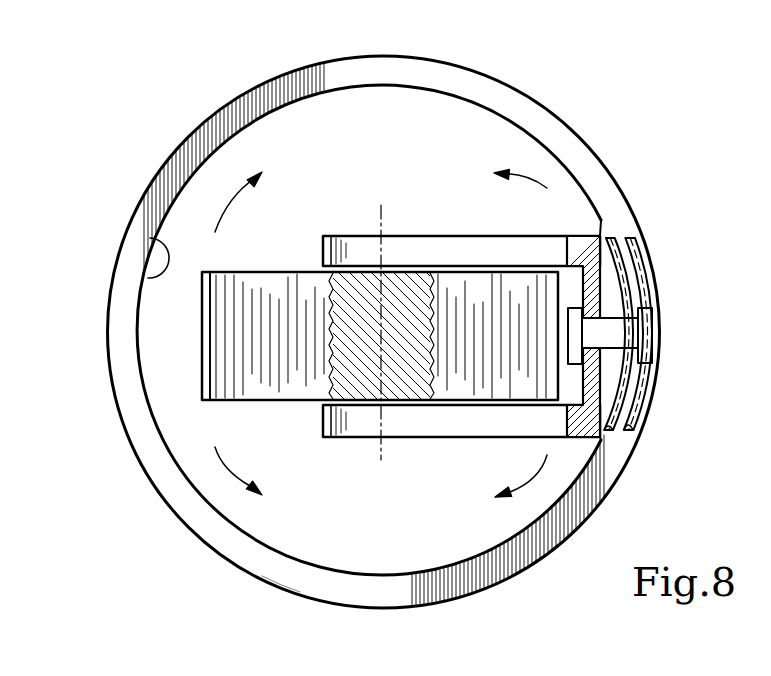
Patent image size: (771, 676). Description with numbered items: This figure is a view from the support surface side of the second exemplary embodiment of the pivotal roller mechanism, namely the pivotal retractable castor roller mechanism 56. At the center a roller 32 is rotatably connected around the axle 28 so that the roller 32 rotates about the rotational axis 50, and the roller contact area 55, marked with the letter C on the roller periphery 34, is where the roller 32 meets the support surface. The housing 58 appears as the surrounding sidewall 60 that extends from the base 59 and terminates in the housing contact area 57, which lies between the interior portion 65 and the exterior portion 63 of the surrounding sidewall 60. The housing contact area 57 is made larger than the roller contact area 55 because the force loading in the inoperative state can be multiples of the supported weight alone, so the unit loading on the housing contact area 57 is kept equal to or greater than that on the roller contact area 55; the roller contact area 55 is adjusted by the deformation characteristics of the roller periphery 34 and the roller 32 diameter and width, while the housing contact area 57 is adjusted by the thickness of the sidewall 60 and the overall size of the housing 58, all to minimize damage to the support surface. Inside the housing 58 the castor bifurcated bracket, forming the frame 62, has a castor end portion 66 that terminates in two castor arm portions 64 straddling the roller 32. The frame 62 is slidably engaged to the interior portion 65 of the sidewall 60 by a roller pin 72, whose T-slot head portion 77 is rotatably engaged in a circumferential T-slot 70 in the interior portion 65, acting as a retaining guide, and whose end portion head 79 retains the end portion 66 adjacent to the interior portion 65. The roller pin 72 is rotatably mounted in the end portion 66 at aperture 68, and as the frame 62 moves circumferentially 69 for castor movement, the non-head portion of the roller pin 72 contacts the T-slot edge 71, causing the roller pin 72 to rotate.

The axle 28 is at (378, 242).
The roller 32 is at (305, 290).
The roller periphery 34 is at (205, 338).
The rotational axis 50 is at (382, 458).
The contact area 55 is at (391, 385).
The pivotal retractable castor roller mechanism 56 is at (227, 71).
The housing contact area 57 is at (335, 585).
The housing 58 is at (180, 152).
The base 59 is at (300, 535).
The surrounding sidewall 60 is at (137, 437).
The frame 62 is at (594, 235).
The exterior portion 63 is at (110, 298).
The castor arm portions 64 is at (430, 236).
The interior portion 65 is at (150, 240).
The castor end portion 66 is at (600, 425).
The aperture 68 is at (612, 238).
The circumferential movement 69 is at (220, 212).
The circumferential T-slot 70 is at (650, 270).
The T-slot edge 71 is at (628, 262).
The roller pin 72 is at (620, 332).
The T-slot head portion 77 is at (652, 345).
The end portion head 79 is at (585, 365).